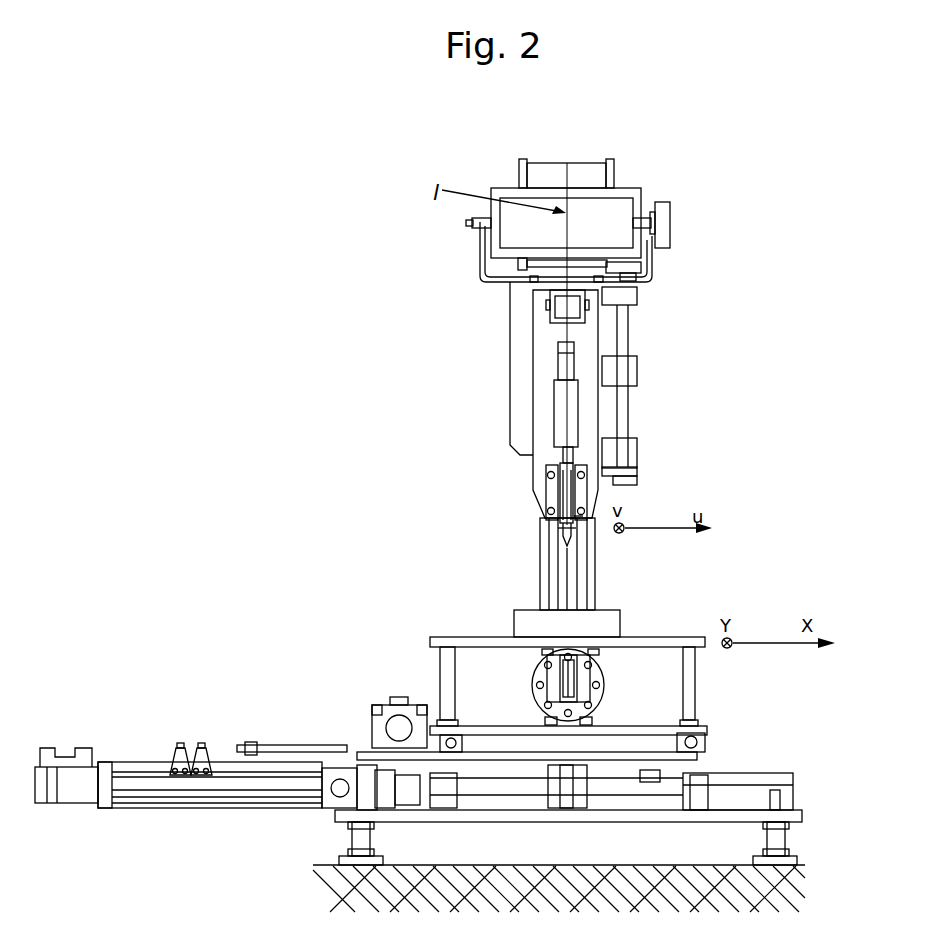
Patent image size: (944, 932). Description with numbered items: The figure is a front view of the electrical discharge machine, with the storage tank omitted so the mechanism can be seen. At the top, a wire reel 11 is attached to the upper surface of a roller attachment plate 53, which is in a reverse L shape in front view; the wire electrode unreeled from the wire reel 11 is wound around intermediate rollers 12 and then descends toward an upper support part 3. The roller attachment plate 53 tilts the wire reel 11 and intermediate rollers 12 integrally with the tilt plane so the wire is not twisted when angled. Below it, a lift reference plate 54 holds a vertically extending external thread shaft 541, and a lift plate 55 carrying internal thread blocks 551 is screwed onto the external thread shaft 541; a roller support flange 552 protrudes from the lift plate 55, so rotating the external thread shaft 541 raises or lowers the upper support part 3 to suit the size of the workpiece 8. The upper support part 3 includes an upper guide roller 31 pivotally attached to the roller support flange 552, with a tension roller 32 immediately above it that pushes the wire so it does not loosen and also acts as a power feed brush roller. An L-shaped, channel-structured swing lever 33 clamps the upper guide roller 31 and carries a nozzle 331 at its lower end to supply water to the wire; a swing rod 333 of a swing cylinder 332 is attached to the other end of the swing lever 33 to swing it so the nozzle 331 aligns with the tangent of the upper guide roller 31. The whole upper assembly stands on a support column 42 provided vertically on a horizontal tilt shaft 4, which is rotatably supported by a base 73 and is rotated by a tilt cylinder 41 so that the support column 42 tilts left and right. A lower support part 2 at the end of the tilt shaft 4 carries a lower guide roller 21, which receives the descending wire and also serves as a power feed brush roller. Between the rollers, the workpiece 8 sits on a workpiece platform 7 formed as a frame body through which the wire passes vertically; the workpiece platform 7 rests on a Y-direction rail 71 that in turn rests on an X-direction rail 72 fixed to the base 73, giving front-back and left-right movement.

The wire reel 11 is at (585, 163).
The intermediate roller 12 is at (505, 190).
The roller attachment plate 53 is at (490, 282).
The lift reference plate 54 is at (518, 350).
The lift plate 55 is at (593, 398).
The external thread shaft 541 is at (625, 424).
The internal thread block 551 is at (637, 365).
The roller support flange 552 is at (598, 492).
The swing cylinder 332 is at (557, 400).
The swing rod 333 is at (563, 455).
The upper support part 3 is at (545, 502).
The tension roller 32 is at (550, 470).
The upper guide roller 31 is at (553, 517).
The nozzle 331 is at (565, 530).
The swing lever 33 is at (583, 515).
The support column 42 is at (595, 575).
The workpiece 8 is at (516, 610).
The workpiece platform 7 is at (428, 637).
The tilt shaft 4 is at (612, 679).
The lower support part 2 is at (543, 677).
The lower guide roller 21 is at (547, 682).
The Y-direction rail 71 is at (372, 728).
The tilt cylinder 41 is at (148, 785).
The X-direction rail 72 is at (765, 773).
The base 73 is at (540, 800).